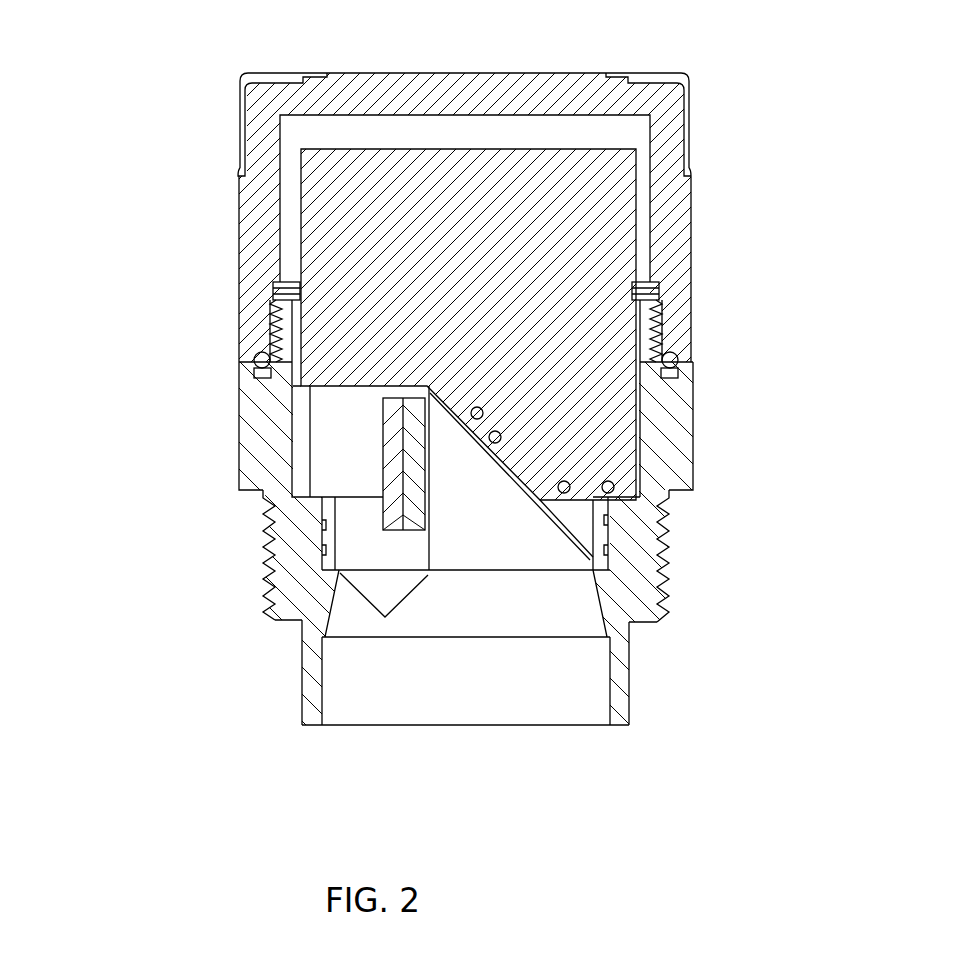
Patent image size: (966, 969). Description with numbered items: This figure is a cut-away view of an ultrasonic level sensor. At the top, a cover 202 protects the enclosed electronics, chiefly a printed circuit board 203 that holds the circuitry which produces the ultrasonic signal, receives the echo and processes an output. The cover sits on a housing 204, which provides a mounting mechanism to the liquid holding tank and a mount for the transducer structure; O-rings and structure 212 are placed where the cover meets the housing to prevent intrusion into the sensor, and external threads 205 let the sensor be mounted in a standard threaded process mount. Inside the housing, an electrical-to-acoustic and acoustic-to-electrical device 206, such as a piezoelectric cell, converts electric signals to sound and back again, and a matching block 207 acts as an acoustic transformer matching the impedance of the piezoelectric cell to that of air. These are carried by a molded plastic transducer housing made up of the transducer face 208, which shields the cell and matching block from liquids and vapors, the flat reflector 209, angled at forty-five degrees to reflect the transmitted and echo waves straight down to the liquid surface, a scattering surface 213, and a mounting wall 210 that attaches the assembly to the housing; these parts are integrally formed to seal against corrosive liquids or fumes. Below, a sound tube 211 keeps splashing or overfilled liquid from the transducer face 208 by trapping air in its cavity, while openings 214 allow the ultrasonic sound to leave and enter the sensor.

The cover 202 is at (327, 112).
The printed circuit board 203 is at (532, 269).
The housing 204 is at (257, 443).
The threads 205 is at (258, 555).
The electrical-to-acoustic and acoustic-to-electrical device 206 is at (400, 447).
The matching block 207 is at (415, 497).
The transducer face 208 is at (429, 520).
The flat reflector 209 is at (501, 497).
The mounting wall 210 is at (610, 557).
The sound tube 211 is at (633, 717).
The O-rings and structure 212 is at (690, 373).
The scattering surface 213 is at (372, 623).
The openings 214 is at (475, 725).